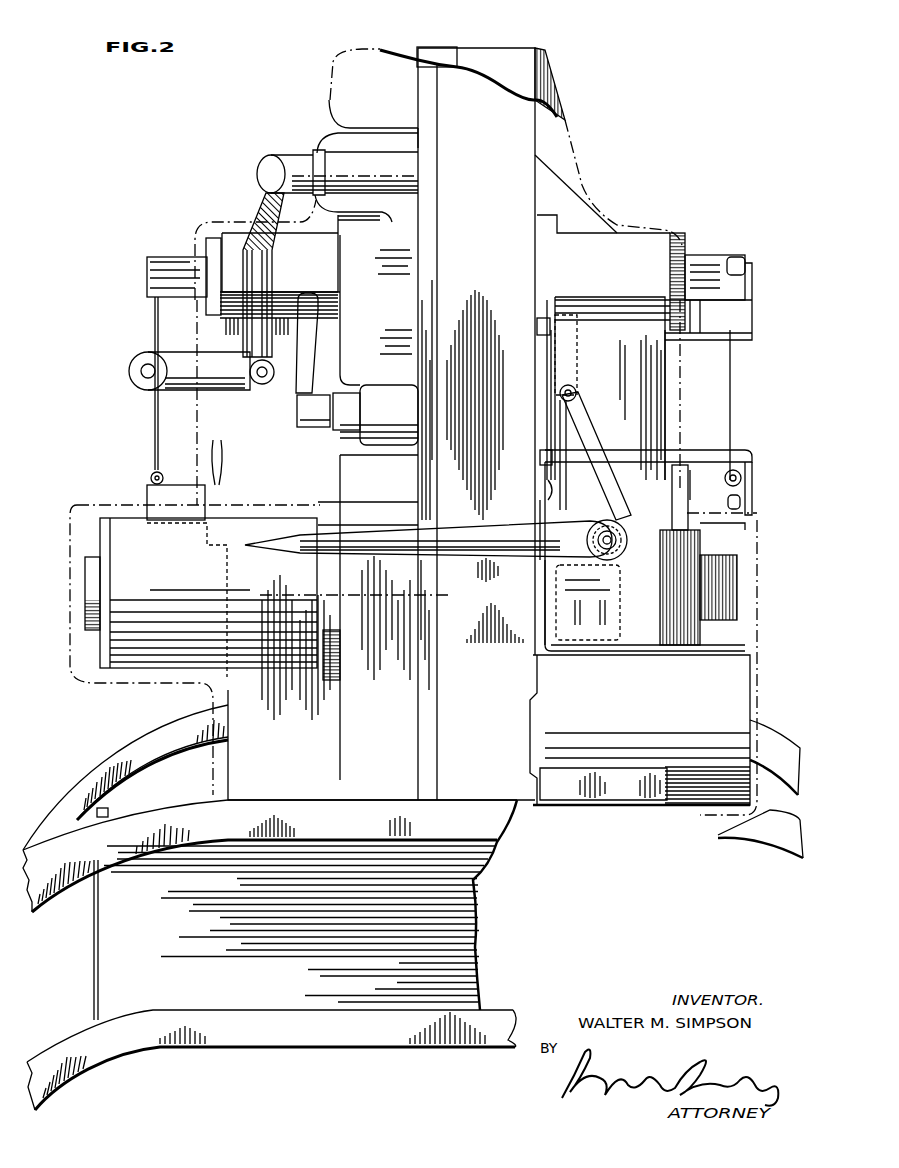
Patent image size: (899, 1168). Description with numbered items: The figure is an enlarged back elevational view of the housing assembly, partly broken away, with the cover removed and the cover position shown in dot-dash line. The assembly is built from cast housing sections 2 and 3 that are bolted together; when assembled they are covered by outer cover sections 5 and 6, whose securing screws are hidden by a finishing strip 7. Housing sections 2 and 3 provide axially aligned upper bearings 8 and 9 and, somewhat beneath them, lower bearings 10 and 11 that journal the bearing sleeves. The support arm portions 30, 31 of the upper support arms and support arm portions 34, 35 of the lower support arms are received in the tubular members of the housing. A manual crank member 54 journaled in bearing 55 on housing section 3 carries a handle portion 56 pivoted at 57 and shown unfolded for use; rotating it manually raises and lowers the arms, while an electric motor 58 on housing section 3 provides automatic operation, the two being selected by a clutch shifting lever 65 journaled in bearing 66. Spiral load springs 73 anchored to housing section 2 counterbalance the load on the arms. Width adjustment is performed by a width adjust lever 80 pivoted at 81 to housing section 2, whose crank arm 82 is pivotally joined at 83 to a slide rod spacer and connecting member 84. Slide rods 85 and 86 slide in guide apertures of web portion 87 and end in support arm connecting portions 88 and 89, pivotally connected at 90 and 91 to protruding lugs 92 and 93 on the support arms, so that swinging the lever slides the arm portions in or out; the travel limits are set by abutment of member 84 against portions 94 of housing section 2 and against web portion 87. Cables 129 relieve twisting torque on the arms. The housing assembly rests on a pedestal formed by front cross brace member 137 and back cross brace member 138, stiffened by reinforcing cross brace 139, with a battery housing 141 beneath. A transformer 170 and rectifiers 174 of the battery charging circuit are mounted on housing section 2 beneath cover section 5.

The housing section 2 is at (480, 270).
The housing section 3 is at (418, 283).
The outer cover section 5 is at (552, 85).
The outer cover section 6 is at (400, 855).
The finishing strip 7 is at (440, 54).
The upper bearing 8 is at (680, 246).
The upper bearing 9 is at (208, 240).
The lower bearing 10 is at (684, 500).
The lower bearing 11 is at (219, 462).
The support arm portion 30 is at (713, 260).
The support arm portion 31 is at (182, 257).
The support arm portion 34 is at (715, 525).
The support arm portion 35 is at (183, 490).
The crank member 54 is at (268, 280).
The bearing 55 is at (345, 170).
The handle portion 56 is at (198, 375).
The pivot 57 is at (262, 380).
The electric motor 58 is at (193, 582).
The clutch shifting lever 65 is at (310, 330).
The bearing 66 is at (350, 440).
The spiral load spring 73 is at (725, 700).
The width adjust lever 80 is at (428, 539).
The pivot 81 is at (628, 520).
The crank arm 82 is at (595, 438).
The pivotal engagement 83 is at (575, 393).
The slide rod spacer and connecting member 84 is at (573, 364).
The slide rod 85 is at (690, 337).
The slide rod 86 is at (690, 457).
The web portion 87 is at (672, 402).
The support arm connecting portion 88 is at (750, 302).
The support arm connecting portion 89 is at (753, 485).
The pivot connection 90 is at (756, 275).
The pivot connection 91 is at (750, 510).
The protruding lug 92 is at (737, 262).
The protruding lug 93 is at (742, 522).
The portions of housing section 94 is at (540, 333).
The cable 129 is at (740, 368).
The front cross brace member 137 is at (95, 763).
The back cross brace member 138 is at (515, 822).
The reinforcing cross brace 139 is at (495, 1015).
The battery housing 141 is at (440, 939).
The transformer 170 is at (692, 595).
The rectifiers 174 is at (553, 490).